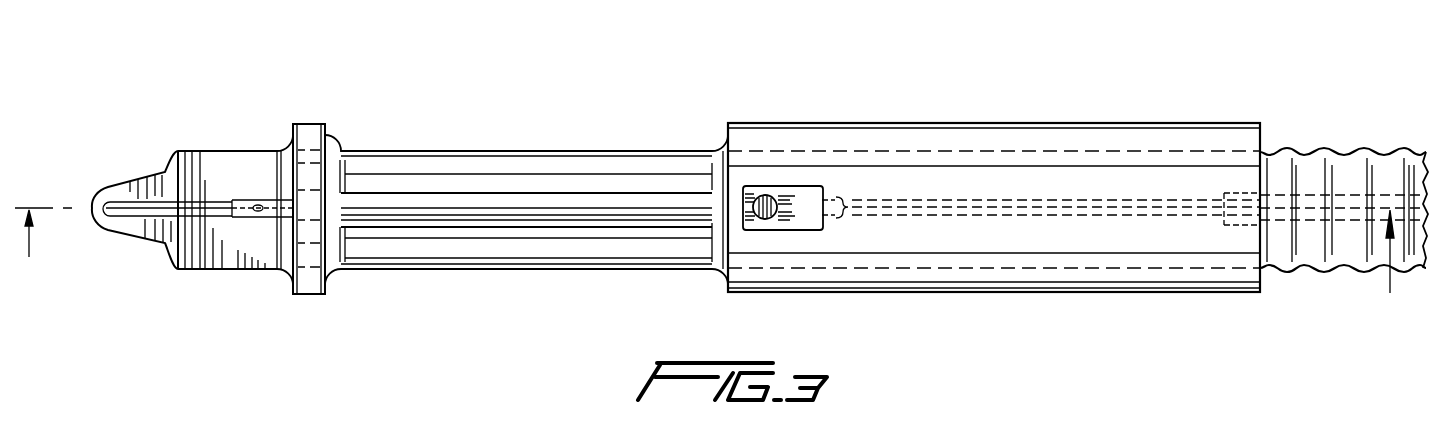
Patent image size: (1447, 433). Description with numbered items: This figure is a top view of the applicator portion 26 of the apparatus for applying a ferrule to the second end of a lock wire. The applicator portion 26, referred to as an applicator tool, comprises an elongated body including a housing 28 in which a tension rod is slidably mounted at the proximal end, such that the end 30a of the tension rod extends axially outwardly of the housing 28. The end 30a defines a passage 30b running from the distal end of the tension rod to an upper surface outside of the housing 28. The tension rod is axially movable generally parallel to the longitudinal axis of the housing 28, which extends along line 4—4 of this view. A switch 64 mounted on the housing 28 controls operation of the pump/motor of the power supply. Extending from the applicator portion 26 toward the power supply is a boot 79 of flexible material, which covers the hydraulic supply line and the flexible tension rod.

The applicator portion 26 is at (582, 277).
The housing 28 is at (840, 291).
The end of the tension rod 30a is at (232, 200).
The passage 30b is at (260, 205).
The switch 64 is at (765, 186).
The boot 79 is at (1352, 256).
The section line 4- 4 is at (706, 267).